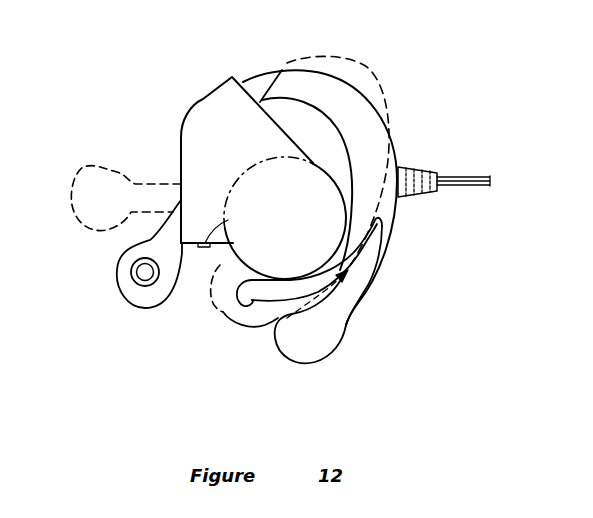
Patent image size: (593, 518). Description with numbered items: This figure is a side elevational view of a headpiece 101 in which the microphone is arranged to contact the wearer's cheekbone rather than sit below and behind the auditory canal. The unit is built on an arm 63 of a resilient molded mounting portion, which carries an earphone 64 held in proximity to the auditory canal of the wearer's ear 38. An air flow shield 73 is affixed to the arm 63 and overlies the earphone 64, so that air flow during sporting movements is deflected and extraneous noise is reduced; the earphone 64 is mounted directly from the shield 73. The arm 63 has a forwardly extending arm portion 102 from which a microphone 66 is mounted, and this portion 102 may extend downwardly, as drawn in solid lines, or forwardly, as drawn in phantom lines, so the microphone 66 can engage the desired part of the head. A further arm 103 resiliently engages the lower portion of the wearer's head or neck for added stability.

The headpiece 101 is at (364, 92).
The first arm 63 is at (257, 87).
The air flow shield 73 is at (203, 123).
The wearer's ear 38 is at (393, 129).
The forwardly extending arm portion 102 is at (88, 166).
The microphone 66 is at (145, 278).
The earphone 64 is at (205, 247).
The further arm 103 is at (340, 324).